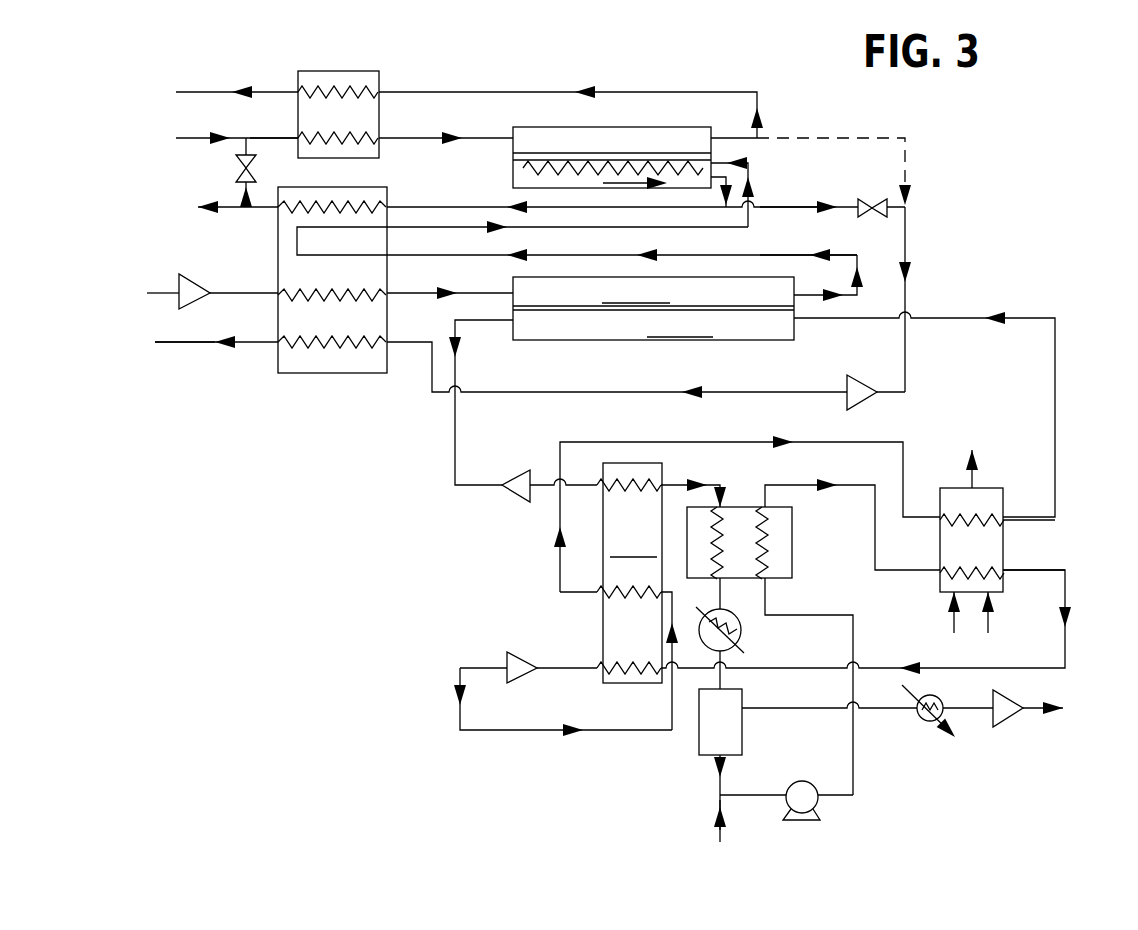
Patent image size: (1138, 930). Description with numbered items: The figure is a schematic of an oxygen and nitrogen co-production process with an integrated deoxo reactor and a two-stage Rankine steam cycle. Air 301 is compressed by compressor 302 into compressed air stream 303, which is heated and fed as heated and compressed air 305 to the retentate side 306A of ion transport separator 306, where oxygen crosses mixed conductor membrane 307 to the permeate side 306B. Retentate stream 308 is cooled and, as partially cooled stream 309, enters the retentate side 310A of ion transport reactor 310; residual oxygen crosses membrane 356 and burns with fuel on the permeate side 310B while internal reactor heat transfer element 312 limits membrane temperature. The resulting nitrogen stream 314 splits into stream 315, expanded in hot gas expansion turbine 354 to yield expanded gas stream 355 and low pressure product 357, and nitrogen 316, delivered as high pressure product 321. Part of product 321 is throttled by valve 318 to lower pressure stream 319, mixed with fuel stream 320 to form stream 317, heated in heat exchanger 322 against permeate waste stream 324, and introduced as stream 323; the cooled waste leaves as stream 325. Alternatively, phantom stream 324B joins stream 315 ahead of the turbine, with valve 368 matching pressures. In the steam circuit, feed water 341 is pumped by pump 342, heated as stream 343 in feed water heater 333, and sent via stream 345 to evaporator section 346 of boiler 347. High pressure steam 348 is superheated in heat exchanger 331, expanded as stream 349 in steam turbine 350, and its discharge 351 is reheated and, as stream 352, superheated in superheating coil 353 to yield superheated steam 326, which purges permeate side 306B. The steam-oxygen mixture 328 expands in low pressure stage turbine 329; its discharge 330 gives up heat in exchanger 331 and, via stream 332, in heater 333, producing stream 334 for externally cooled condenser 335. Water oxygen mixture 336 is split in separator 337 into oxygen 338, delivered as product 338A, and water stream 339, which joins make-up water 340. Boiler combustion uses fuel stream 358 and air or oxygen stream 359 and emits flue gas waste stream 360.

The air 301 is at (162, 291).
The compressor 302 is at (189, 305).
The compressed air stream 303 is at (250, 293).
The heated and compressed air 305 is at (413, 293).
The ion transport separator 306 is at (513, 279).
The retentate side 306A is at (636, 292).
The permeate side 306B is at (680, 325).
The mixed conductor membrane 307 is at (736, 307).
The retentate stream 308 is at (778, 254).
The partially cooled stream 309 is at (450, 227).
The ion transport reactor 310 is at (643, 127).
The retentate side 310A is at (612, 140).
The permeate side 310B is at (574, 182).
The internal reactor heat transfer element 312 is at (523, 170).
The stream 314 is at (749, 178).
The stream 315 is at (812, 205).
The nitrogen 316 is at (464, 207).
The stream 317 is at (279, 137).
The valve 318 is at (256, 168).
The lower pressure stream 319 is at (244, 149).
The fuel stream 320 is at (198, 137).
The high pressure product 321 is at (226, 208).
The heat exchanger 322 is at (379, 73).
The stream 323 is at (494, 138).
The permeate waste stream 324 is at (725, 91).
The stream 324B is at (819, 137).
The stream 325 is at (216, 90).
The high pressure superheated steam 326 is at (1040, 317).
The steam-oxygen mixture 328 is at (457, 370).
The low pressure stage turbine 329 is at (511, 503).
The discharge 330 is at (558, 473).
The heat exchanger 331 is at (629, 573).
The stream 332 is at (678, 480).
The feed water heater 333 is at (754, 506).
The stream 334 is at (720, 592).
The externally cooled condenser 335 is at (741, 638).
The water oxygen mixture 336 is at (728, 679).
The separator 337 is at (698, 746).
The oxygen 338 is at (797, 710).
The product 338A is at (1033, 709).
The water stream 339 is at (717, 792).
The make-up water 340 is at (720, 843).
The feed water 341 is at (749, 796).
The pump 342 is at (818, 806).
The stream 343 is at (854, 749).
The stream 345 is at (856, 486).
The evaporator section 346 is at (998, 554).
The boiler 347 is at (1003, 533).
The high pressure steam 348 is at (1066, 634).
The stream 349 is at (576, 667).
The steam turbine 350 is at (506, 656).
The discharge 351 is at (529, 733).
The stream 352 is at (558, 576).
The superheating coil 353 is at (997, 517).
The hot gas expansion turbine 354 is at (865, 402).
The expanded gas stream 355 is at (731, 392).
The membrane 356 is at (686, 153).
The low pressure product 357 is at (185, 343).
The fuel stream 358 is at (952, 628).
The air or oxygen stream 359 is at (990, 628).
The flue gas waste stream 360 is at (988, 466).
The valve 368 is at (877, 218).